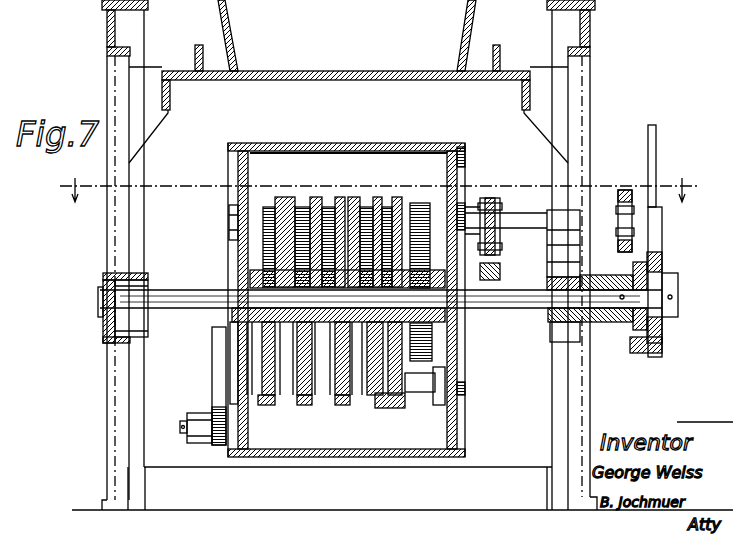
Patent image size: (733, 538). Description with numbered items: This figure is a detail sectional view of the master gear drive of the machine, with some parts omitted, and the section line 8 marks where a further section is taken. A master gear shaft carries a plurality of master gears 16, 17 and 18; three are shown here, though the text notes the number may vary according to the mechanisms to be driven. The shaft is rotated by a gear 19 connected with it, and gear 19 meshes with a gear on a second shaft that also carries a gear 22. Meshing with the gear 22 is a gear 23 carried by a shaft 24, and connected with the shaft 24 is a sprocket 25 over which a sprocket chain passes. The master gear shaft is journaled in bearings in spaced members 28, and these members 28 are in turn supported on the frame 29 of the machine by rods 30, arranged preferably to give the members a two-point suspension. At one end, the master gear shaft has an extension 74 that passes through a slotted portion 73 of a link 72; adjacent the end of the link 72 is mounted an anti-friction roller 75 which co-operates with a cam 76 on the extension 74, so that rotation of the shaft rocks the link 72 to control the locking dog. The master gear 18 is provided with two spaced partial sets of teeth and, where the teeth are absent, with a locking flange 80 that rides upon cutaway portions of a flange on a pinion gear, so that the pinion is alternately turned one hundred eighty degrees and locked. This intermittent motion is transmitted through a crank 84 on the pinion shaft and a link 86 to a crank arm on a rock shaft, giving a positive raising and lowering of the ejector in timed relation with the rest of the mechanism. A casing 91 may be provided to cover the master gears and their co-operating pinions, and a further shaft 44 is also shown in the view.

The section line 8- 8 is at (377, 190).
The master gear 16 is at (357, 405).
The master gear 17 is at (305, 188).
The master gear 18 is at (290, 405).
The gear 19 is at (357, 196).
The gear 22 is at (430, 350).
The gear 23 is at (420, 200).
The shaft 24 is at (472, 220).
The sprocket 25 is at (626, 188).
The spaced members 28 is at (230, 173).
The frame 29 is at (117, 79).
The rods 30 is at (100, 300).
The shaft 44 is at (318, 183).
The link 72 is at (657, 147).
The slotted portion 73 is at (653, 286).
The extension 74 is at (680, 300).
The anti-friction roller 75 is at (636, 352).
The cam 76 is at (663, 265).
The locking flange 80 is at (237, 198).
The crank 84 is at (215, 372).
The link 86 is at (205, 412).
The casing 91 is at (290, 142).